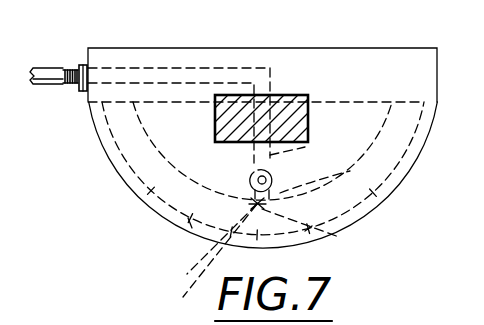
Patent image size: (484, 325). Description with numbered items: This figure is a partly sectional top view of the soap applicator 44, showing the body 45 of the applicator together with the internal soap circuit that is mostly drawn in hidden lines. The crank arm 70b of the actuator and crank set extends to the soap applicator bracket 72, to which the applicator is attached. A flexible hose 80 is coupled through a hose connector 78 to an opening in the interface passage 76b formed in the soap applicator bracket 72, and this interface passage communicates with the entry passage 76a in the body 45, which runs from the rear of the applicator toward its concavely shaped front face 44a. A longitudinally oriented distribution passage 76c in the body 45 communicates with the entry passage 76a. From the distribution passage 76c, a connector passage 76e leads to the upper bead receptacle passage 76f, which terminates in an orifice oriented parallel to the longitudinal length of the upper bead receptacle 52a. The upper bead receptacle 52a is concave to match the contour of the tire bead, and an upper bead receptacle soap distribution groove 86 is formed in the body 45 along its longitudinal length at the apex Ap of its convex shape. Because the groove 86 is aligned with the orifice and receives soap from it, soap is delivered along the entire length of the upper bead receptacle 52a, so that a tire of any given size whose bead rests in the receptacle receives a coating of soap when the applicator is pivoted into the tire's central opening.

The soap applicator bracket 72 is at (342, 48).
The body 45 is at (143, 201).
The flexible hose 80 is at (47, 67).
The hose connector 78 is at (75, 89).
The interface passage 76b is at (124, 70).
The entry passage 76a is at (309, 145).
The crank arm 70b is at (274, 100).
The soap applicator 44 is at (375, 101).
The front face 44a is at (388, 200).
The distribution passage 76c is at (249, 168).
The connector passage 76e is at (315, 176).
The upper bead receptacle soap distribution groove 86 is at (199, 261).
The apex Ap is at (181, 273).
The upper bead receptacle passage 76f is at (339, 238).
The upper bead receptacle 52a is at (186, 230).